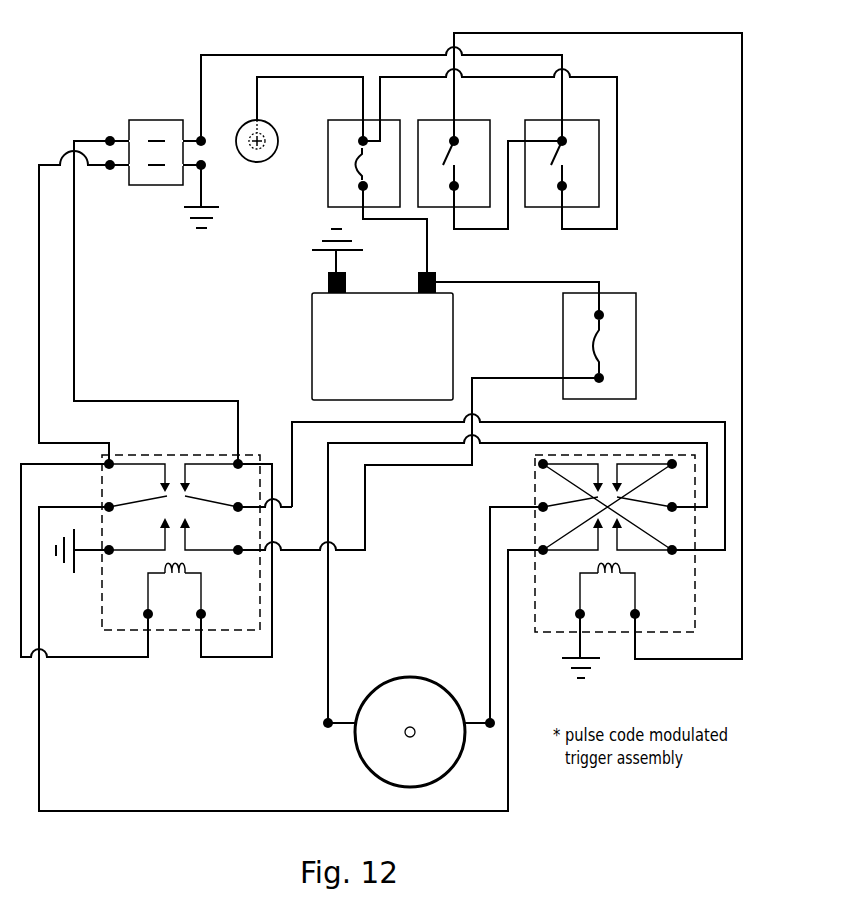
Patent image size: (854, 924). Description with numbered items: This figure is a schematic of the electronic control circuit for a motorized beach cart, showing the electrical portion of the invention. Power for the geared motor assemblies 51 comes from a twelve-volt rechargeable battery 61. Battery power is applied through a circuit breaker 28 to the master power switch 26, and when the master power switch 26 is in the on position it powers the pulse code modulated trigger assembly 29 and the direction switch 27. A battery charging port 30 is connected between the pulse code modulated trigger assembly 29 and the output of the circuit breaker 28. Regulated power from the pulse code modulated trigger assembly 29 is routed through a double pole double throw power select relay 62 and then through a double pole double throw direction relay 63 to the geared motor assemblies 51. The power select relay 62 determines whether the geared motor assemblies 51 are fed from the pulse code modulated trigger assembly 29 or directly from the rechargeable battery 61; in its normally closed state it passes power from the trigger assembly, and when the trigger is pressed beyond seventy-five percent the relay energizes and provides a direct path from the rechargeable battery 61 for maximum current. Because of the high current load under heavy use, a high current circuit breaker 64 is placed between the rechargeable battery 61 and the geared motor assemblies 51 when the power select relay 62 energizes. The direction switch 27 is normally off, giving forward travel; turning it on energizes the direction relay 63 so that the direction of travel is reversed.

The master power switch 26 is at (538, 126).
The direction switch 27 is at (448, 127).
The circuit breaker 28 is at (357, 127).
The pulse code modulated trigger assembly 29 is at (157, 183).
The battery charging port 30 is at (248, 126).
The geared motor assemblies 51 is at (370, 737).
The rechargeable battery 61 is at (381, 298).
The power select relay 62 is at (172, 462).
The direction relay 63 is at (547, 488).
The high current circuit breaker 64 is at (618, 299).